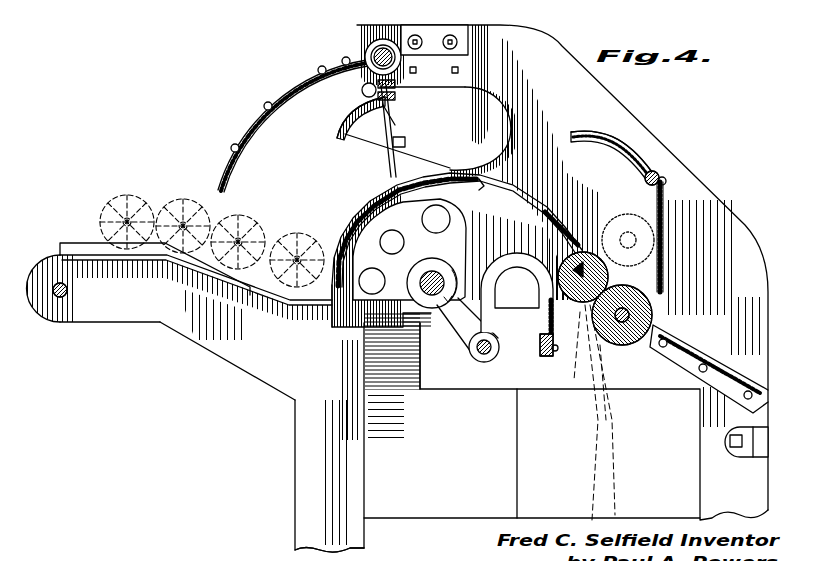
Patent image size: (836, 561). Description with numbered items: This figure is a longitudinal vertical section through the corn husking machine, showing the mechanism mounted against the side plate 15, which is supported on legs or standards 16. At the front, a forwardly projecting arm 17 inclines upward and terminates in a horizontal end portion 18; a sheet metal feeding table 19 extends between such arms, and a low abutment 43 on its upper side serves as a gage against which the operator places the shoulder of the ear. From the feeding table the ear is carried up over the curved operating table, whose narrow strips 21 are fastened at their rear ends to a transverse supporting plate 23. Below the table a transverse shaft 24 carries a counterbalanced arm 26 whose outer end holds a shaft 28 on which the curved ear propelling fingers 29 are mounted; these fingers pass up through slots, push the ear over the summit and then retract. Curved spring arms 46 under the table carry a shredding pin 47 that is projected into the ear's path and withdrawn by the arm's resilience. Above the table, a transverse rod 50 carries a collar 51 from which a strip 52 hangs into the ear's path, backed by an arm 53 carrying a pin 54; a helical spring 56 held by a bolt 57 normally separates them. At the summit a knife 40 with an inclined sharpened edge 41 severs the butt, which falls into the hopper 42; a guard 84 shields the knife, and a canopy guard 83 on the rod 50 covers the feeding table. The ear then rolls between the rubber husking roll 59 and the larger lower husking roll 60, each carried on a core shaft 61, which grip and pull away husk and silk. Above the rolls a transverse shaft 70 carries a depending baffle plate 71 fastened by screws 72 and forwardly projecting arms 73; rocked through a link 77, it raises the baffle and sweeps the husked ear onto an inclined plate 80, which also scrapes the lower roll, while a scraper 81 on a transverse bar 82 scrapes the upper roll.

The side plate 15 is at (490, 453).
The legs or standards 16 is at (360, 541).
The forwardly projecting arms 17 is at (238, 365).
The horizontal end portions 18 is at (179, 288).
The feeding table 19 is at (45, 262).
The narrow strips 21 is at (350, 225).
The transverse supporting plate 23 is at (550, 232).
The transverse shaft 24 is at (437, 272).
The arm 26 is at (411, 380).
The shaft 28 is at (484, 362).
The ear propelling fingers 29 is at (514, 265).
The knife 40 is at (434, 73).
The sharpened edge 41 is at (345, 141).
The hopper 42 is at (396, 386).
The abutment 43 is at (70, 243).
The curved spring arms 46 is at (480, 195).
The shredding pin or finger 47 is at (400, 181).
The transverse rod 50 is at (378, 50).
The collar 51 is at (388, 34).
The strip 52 is at (390, 163).
The arm 53 is at (405, 145).
The pin 54 is at (405, 137).
The helical spring 56 is at (388, 118).
The bolt 57 is at (400, 110).
The rubber husking roll 59 is at (592, 233).
The lower rear husking roll 60 is at (653, 313).
The shaft 61 is at (596, 306).
The transverse shaft 70 is at (658, 173).
The baffle plate 71 is at (663, 198).
The screws 72 is at (666, 178).
The arms 73 is at (618, 133).
The link 77 is at (603, 147).
The inclined plate or chute 80 is at (683, 343).
The scraper 81 is at (548, 330).
The transverse bar 82 is at (543, 358).
The guard 83 is at (228, 163).
The guard 84 is at (347, 118).